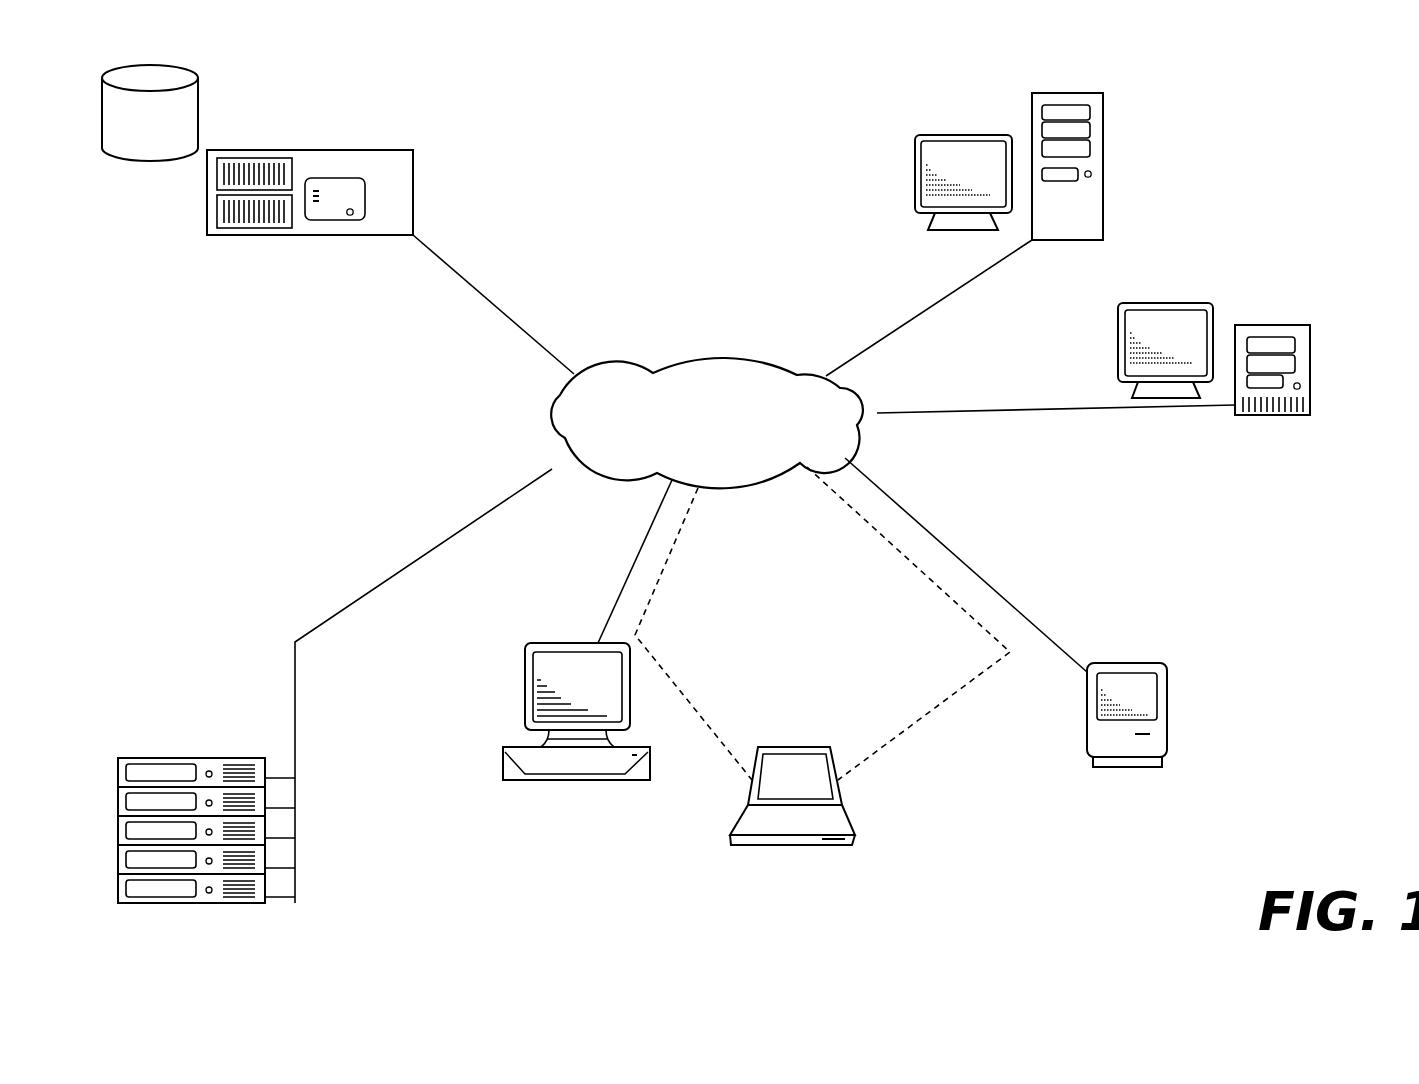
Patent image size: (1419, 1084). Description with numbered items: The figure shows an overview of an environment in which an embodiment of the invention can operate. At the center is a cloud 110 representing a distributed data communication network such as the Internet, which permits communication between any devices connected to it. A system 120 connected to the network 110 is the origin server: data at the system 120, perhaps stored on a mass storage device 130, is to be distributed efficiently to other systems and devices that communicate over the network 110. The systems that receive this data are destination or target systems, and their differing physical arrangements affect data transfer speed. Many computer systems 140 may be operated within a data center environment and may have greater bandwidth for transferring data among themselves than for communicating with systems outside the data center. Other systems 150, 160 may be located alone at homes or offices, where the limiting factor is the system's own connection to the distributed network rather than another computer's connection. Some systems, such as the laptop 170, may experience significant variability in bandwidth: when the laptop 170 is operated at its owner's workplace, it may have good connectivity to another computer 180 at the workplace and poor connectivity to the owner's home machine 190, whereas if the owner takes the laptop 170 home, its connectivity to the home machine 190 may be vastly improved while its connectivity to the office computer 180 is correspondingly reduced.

The cloud 110 is at (845, 456).
The system 120 is at (325, 149).
The mass storage device 130 is at (190, 147).
The computer systems 140 is at (163, 738).
The system 150 is at (1104, 233).
The system 160 is at (1311, 386).
The laptop 170 is at (750, 846).
The computer 180 is at (529, 782).
The home machine 190 is at (1165, 757).